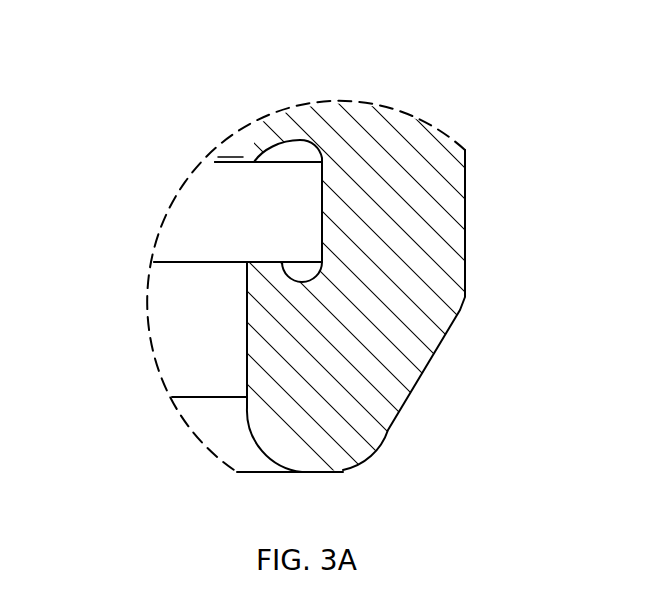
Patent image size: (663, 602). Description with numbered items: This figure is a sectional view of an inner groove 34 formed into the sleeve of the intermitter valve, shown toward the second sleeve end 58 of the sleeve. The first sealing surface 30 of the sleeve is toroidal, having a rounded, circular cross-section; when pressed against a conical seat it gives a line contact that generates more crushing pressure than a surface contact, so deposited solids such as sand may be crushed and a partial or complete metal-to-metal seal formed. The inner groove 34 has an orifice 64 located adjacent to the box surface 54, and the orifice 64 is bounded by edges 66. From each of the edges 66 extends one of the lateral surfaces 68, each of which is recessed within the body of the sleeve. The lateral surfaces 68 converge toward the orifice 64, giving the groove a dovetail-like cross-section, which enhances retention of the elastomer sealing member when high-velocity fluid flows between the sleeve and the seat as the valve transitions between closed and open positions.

The first sealing surface 30 is at (265, 452).
The inner groove 34 is at (302, 249).
The box surface 54 is at (242, 328).
The second sleeve end 58 is at (430, 475).
The orifice 64 is at (252, 205).
The edges 66 is at (254, 162).
The lateral surfaces 68 is at (268, 150).